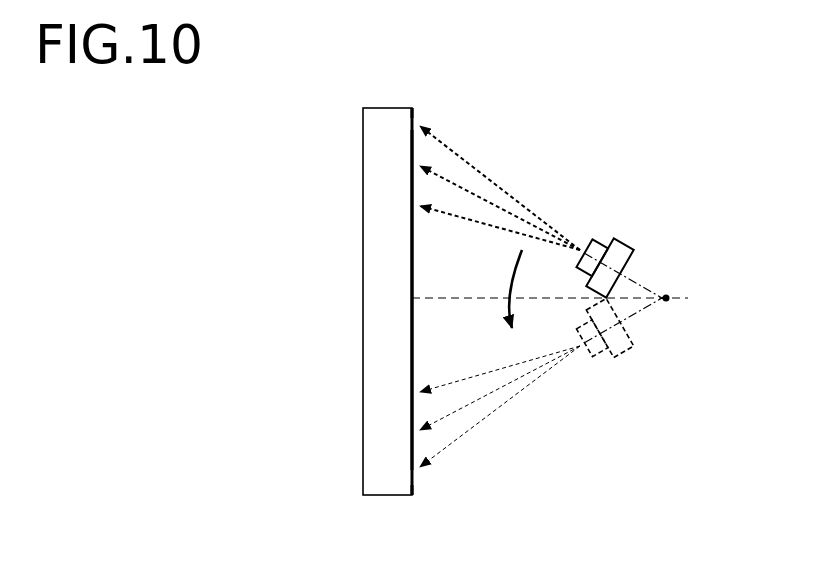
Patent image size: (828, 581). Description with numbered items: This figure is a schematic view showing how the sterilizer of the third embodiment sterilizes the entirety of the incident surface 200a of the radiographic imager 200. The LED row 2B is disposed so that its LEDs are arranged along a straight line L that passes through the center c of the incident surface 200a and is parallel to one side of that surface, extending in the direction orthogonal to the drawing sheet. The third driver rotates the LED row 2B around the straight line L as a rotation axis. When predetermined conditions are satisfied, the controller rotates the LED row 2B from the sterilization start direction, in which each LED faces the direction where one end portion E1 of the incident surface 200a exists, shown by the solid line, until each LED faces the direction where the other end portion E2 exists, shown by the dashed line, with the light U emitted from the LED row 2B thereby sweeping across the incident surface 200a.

The radiographic imager 200 is at (360, 291).
The incident surface 200a is at (413, 268).
The center of the incident surface c is at (412, 298).
The one end portion of the incident surface E1 is at (413, 86).
The other end portion of the incident surface E2 is at (414, 526).
The LED row 2B is at (637, 249).
The straight line L is at (668, 297).
The projected light beams U is at (504, 192).